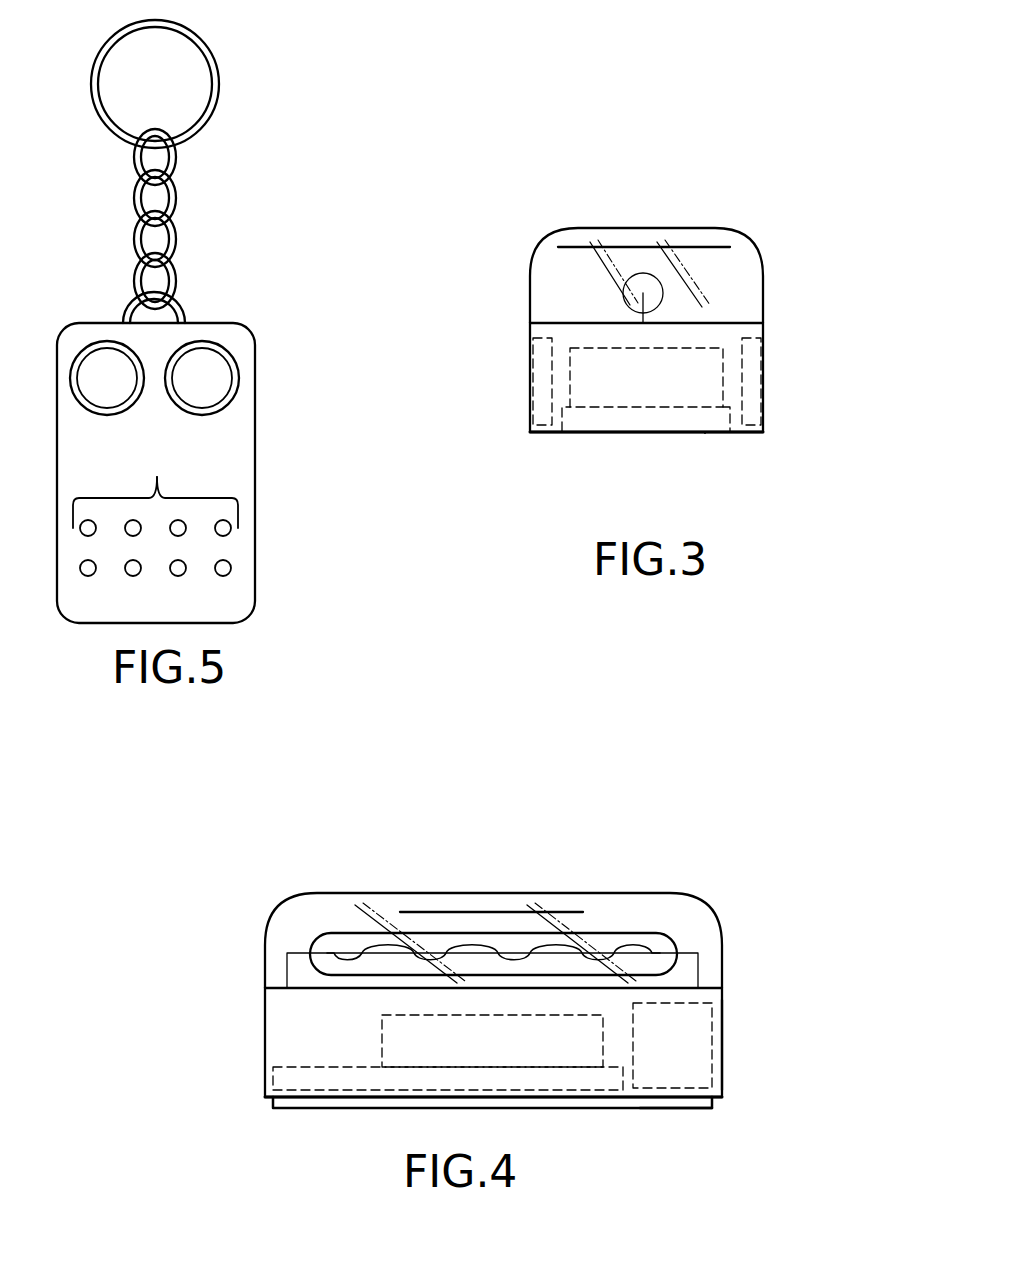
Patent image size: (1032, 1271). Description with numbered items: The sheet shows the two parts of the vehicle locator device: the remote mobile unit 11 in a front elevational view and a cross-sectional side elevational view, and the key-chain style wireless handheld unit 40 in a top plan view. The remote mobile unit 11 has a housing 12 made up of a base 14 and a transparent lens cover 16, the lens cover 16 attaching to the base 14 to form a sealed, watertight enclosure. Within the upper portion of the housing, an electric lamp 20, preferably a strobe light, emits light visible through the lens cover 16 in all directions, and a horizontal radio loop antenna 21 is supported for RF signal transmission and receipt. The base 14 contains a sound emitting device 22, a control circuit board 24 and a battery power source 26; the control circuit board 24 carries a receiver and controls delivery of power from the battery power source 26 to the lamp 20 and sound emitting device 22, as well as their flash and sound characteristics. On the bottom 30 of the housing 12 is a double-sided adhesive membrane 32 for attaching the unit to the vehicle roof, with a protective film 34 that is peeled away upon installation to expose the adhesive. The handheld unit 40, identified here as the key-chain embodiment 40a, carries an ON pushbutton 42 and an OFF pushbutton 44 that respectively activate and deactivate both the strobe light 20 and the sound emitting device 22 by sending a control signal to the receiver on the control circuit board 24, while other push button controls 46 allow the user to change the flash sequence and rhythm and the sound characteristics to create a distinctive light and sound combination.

In FIG. 3, the remote mobile unit 11 is at (649, 322).
In FIG. 4, the remote mobile unit 11 is at (484, 1001).
In FIG. 3, the housing 12 is at (649, 383).
In FIG. 4, the housing 12 is at (513, 1059).
In FIG. 3, the base 14 is at (705, 434).
In FIG. 4, the base 14 is at (722, 1037).
In FIG. 3, the lens cover 16 is at (700, 232).
In FIG. 4, the lens cover 16 is at (516, 888).
In FIG. 4, the electric lamp 20 is at (600, 933).
In FIG. 3, the horizontal radio loop antenna 21 is at (643, 247).
In FIG. 4, the horizontal radio loop antenna 21 is at (483, 912).
In FIG. 3, the sound emitting device 22 is at (540, 372).
In FIG. 4, the sound emitting device 22 is at (395, 1037).
In FIG. 3, the control circuit board 24 is at (578, 420).
In FIG. 4, the control circuit board 24 is at (320, 1066).
In FIG. 3, the battery power source 26 is at (590, 357).
In FIG. 4, the battery power source 26 is at (690, 1058).
In FIG. 3, the bottom 30 is at (672, 434).
In FIG. 4, the bottom 30 is at (718, 1100).
In FIG. 4, the double-sided adhesive membrane 32 is at (302, 1109).
In FIG. 4, the protective film 34 is at (703, 1143).
In FIG. 5, the wireless handheld unit 40 is at (262, 176).
In FIG. 5, the wireless handheld remote control unit 40a is at (210, 425).
In FIG. 5, the ON pushbutton 42 is at (100, 352).
In FIG. 5, the OFF pushbutton 44 is at (203, 352).
In FIG. 5, the push button controls 46 is at (258, 425).